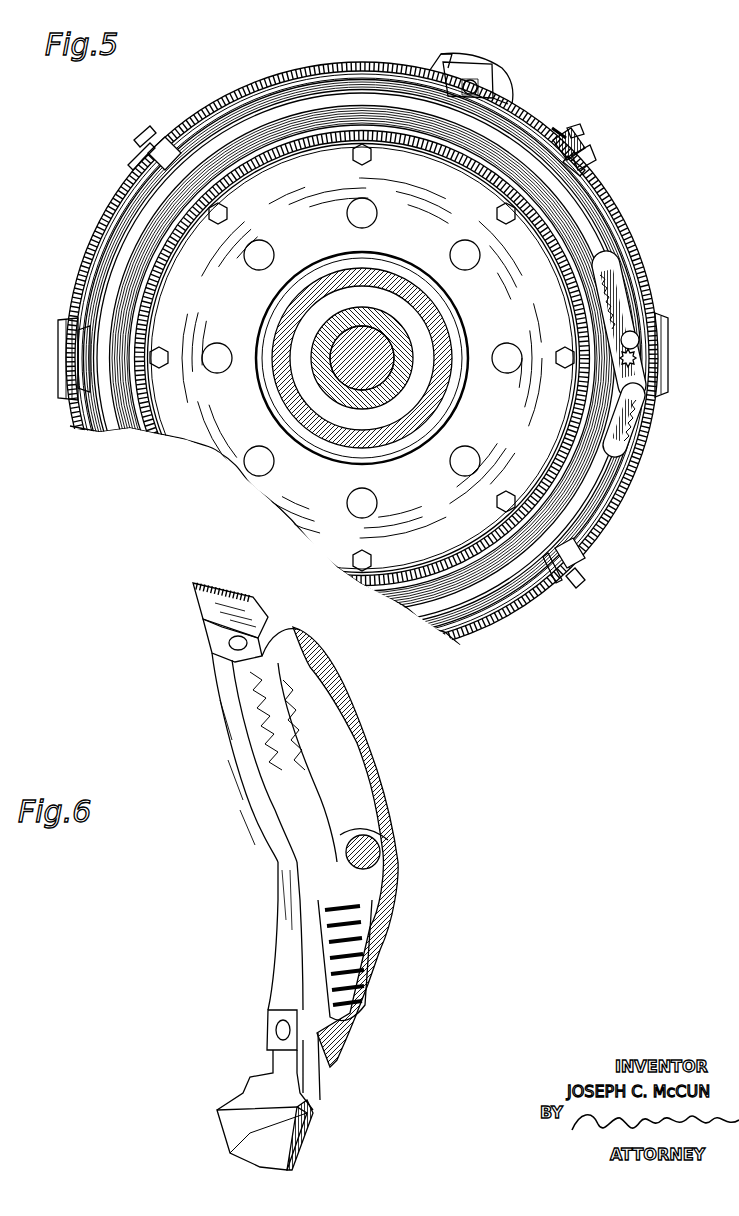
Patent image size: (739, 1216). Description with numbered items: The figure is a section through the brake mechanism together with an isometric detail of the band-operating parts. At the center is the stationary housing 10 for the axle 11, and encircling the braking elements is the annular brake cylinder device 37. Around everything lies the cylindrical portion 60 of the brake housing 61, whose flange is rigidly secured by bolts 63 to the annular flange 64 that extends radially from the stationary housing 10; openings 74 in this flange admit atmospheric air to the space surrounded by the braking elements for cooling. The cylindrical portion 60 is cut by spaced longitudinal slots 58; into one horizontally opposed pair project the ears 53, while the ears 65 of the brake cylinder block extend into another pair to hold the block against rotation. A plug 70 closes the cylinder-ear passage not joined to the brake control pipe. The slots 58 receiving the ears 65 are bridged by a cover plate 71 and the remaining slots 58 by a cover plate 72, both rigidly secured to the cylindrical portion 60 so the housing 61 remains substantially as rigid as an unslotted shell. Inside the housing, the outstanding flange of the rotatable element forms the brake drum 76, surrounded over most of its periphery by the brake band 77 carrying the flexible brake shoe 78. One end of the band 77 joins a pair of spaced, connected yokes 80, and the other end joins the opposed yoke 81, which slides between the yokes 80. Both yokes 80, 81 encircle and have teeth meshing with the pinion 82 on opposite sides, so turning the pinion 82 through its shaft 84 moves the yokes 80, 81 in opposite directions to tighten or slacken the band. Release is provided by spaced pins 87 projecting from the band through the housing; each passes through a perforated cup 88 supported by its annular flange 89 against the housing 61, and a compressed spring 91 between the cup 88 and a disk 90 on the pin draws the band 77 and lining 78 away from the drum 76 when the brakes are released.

In FIG. 5, the stationary housing 10 is at (378, 318).
In FIG. 5, the axle 11 is at (377, 358).
In FIG. 5, the annular brake cylinder device 37 is at (350, 75).
In FIG. 5, the ears 53 is at (77, 349).
In FIG. 5, the slots 58 is at (438, 62).
In FIG. 5, the cylindrical portion 60 is at (407, 63).
In FIG. 5, the brake housing 61 is at (210, 103).
In FIG. 5, the bolts 63 is at (373, 153).
In FIG. 5, the annular flange 64 is at (183, 240).
In FIG. 5, the ears 65 is at (493, 92).
In FIG. 5, the plug 70 is at (470, 83).
In FIG. 5, the cover plate 71 is at (503, 82).
In FIG. 5, the cover plate 72 is at (667, 372).
In FIG. 5, the openings 74 is at (270, 256).
In FIG. 5, the brake drum 76 is at (260, 137).
In FIG. 5, the brake band 77 is at (302, 98).
In FIG. 6, the brake band 77 is at (205, 597).
In FIG. 5, the brake shoe 78 is at (290, 105).
In FIG. 6, the brake shoe 78 is at (217, 1132).
In FIG. 5, the yokes 80 is at (633, 277).
In FIG. 6, the yokes 80 is at (275, 713).
In FIG. 5, the yoke 81 is at (633, 423).
In FIG. 6, the yoke 81 is at (287, 935).
In FIG. 5, the pinion 82 is at (637, 343).
In FIG. 6, the pinion 82 is at (357, 828).
In FIG. 5, the shaft 84 is at (632, 355).
In FIG. 5, the pins 87 is at (567, 152).
In FIG. 5, the cup 88 is at (580, 172).
In FIG. 5, the annular flange 89 is at (577, 158).
In FIG. 5, the disk 90 is at (567, 137).
In FIG. 5, the spring 91 is at (563, 133).